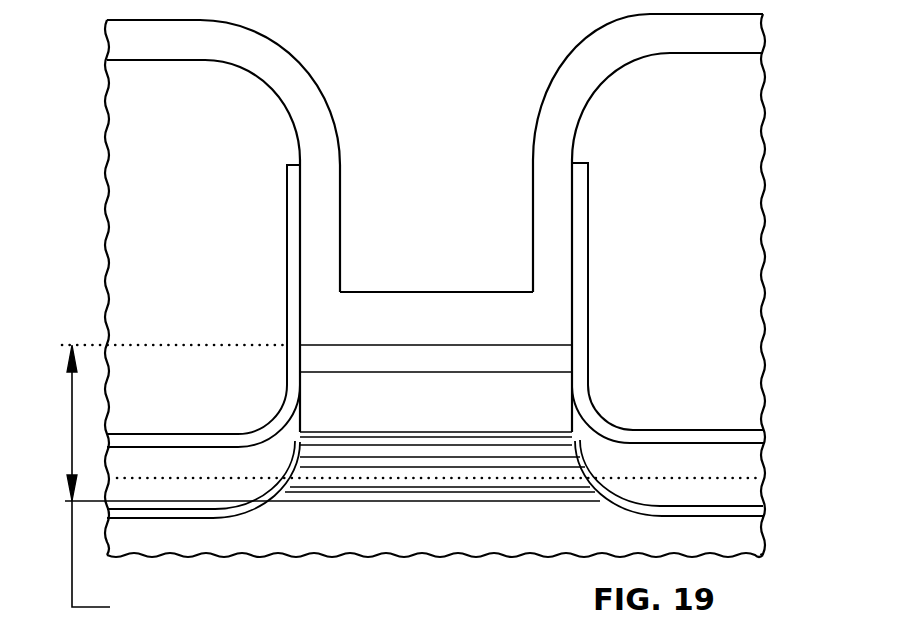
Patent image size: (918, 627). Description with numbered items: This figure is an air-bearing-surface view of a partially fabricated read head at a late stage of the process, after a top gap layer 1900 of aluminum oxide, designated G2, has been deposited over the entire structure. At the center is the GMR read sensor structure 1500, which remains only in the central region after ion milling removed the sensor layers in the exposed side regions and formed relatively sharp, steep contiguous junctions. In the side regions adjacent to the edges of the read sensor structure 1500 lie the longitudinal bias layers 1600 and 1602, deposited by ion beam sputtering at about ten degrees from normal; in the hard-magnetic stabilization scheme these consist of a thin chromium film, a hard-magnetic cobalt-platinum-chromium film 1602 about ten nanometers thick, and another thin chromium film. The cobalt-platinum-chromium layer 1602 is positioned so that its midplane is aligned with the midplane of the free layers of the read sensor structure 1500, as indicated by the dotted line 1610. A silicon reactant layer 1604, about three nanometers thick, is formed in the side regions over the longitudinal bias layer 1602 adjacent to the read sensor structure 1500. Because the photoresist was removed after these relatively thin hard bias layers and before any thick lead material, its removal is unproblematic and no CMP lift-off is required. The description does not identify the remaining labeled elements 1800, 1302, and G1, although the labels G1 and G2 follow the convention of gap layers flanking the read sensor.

The second shield / pole layer 1800 is at (122, 150).
The top gap layer 1900 is at (393, 303).
The silicon reactant layer 1604 is at (762, 437).
The hard-magnetic cobalt-platinum-chromium film 1602 is at (757, 462).
The dotted line 1610 is at (682, 473).
The longitudinal bias layers 1600 is at (760, 506).
The substrate 1302 is at (748, 533).
The GMR read sensor structure 1500 is at (199, 485).
The first shield gap G1 is at (332, 519).
The top gap layer designation G2 is at (436, 338).